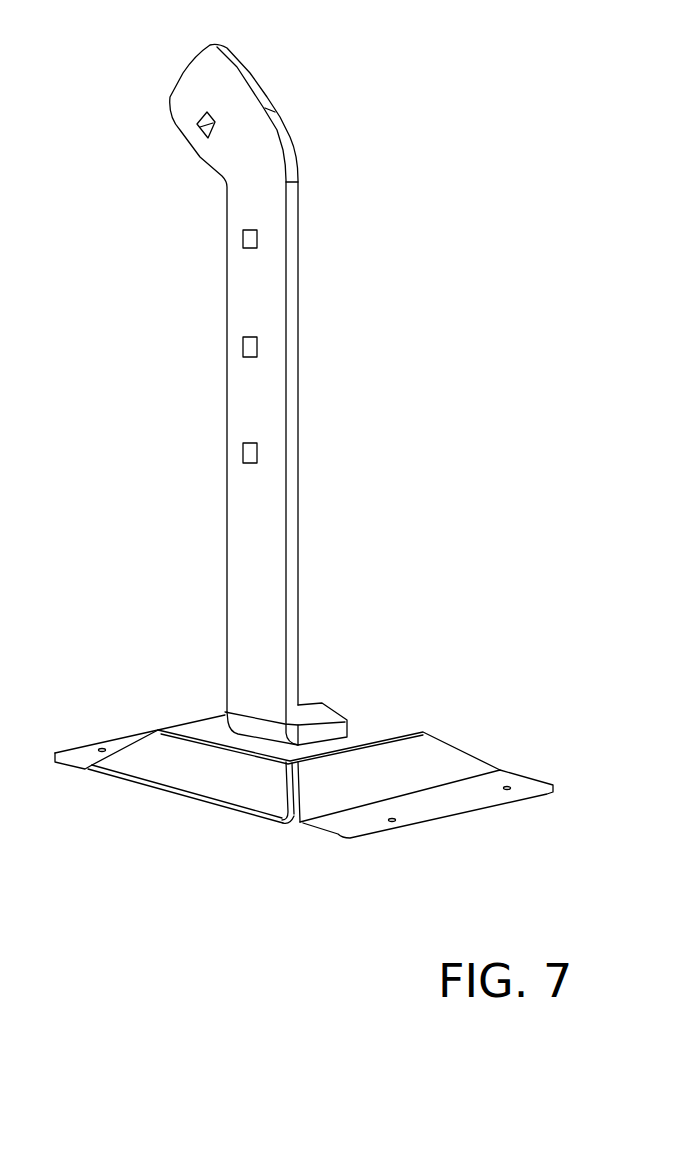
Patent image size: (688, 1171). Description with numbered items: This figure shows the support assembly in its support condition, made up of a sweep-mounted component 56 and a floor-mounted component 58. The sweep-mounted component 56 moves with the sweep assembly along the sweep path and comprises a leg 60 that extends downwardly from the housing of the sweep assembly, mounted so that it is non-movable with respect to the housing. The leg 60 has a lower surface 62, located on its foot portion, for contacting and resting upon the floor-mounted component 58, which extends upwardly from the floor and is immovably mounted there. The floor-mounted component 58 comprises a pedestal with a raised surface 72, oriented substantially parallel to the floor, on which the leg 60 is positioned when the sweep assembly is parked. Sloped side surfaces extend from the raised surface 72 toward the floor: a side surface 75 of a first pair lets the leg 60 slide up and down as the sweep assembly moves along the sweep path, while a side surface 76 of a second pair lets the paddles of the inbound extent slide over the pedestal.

The sweep-mounted component 56 is at (348, 324).
The leg 60 is at (290, 452).
The floor-mounted component 58 is at (195, 826).
The lower surface 62 is at (320, 743).
The raised surface 72 is at (373, 732).
The side surface 75 is at (387, 770).
The side surface 76 is at (150, 763).